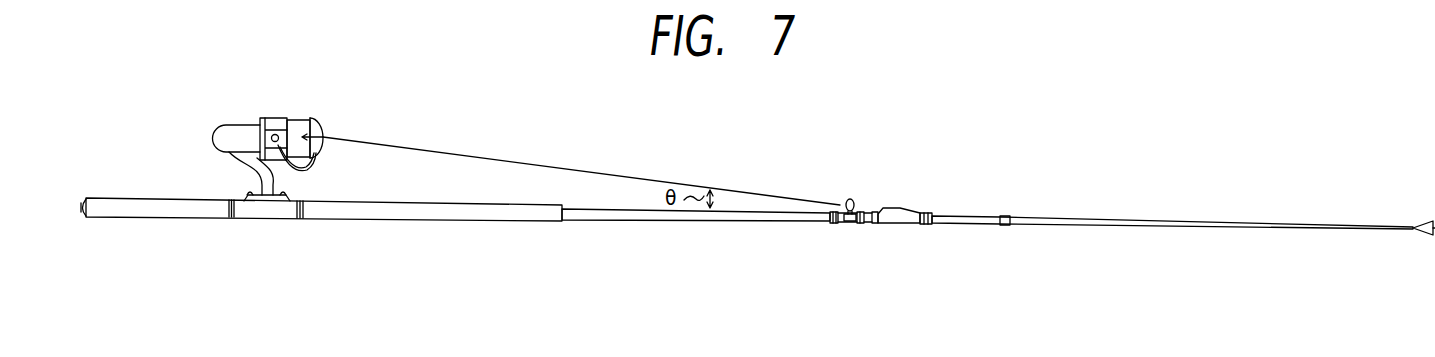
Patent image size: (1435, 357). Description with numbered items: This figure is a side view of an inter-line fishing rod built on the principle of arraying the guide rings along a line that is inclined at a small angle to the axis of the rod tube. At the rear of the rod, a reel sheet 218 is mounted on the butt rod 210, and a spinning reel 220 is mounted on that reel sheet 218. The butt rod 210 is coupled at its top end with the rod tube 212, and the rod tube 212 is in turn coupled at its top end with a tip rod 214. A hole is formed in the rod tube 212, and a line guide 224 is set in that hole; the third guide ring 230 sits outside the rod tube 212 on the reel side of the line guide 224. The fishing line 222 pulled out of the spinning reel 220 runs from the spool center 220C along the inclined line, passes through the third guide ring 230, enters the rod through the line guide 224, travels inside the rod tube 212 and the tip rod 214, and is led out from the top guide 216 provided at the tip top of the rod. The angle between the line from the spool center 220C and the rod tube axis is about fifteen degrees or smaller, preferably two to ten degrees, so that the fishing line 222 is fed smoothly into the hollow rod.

The butt rod 210 is at (432, 216).
The rod tube 212 is at (636, 216).
The tip rod 214 is at (1123, 229).
The top guide 216 is at (1418, 236).
The reel sheet 218 is at (283, 219).
The spinning reel 220 is at (234, 130).
The spool center 220C is at (323, 120).
The fishing line 222 is at (509, 161).
The line guide 224 is at (899, 210).
The third guide ring 230 is at (850, 198).